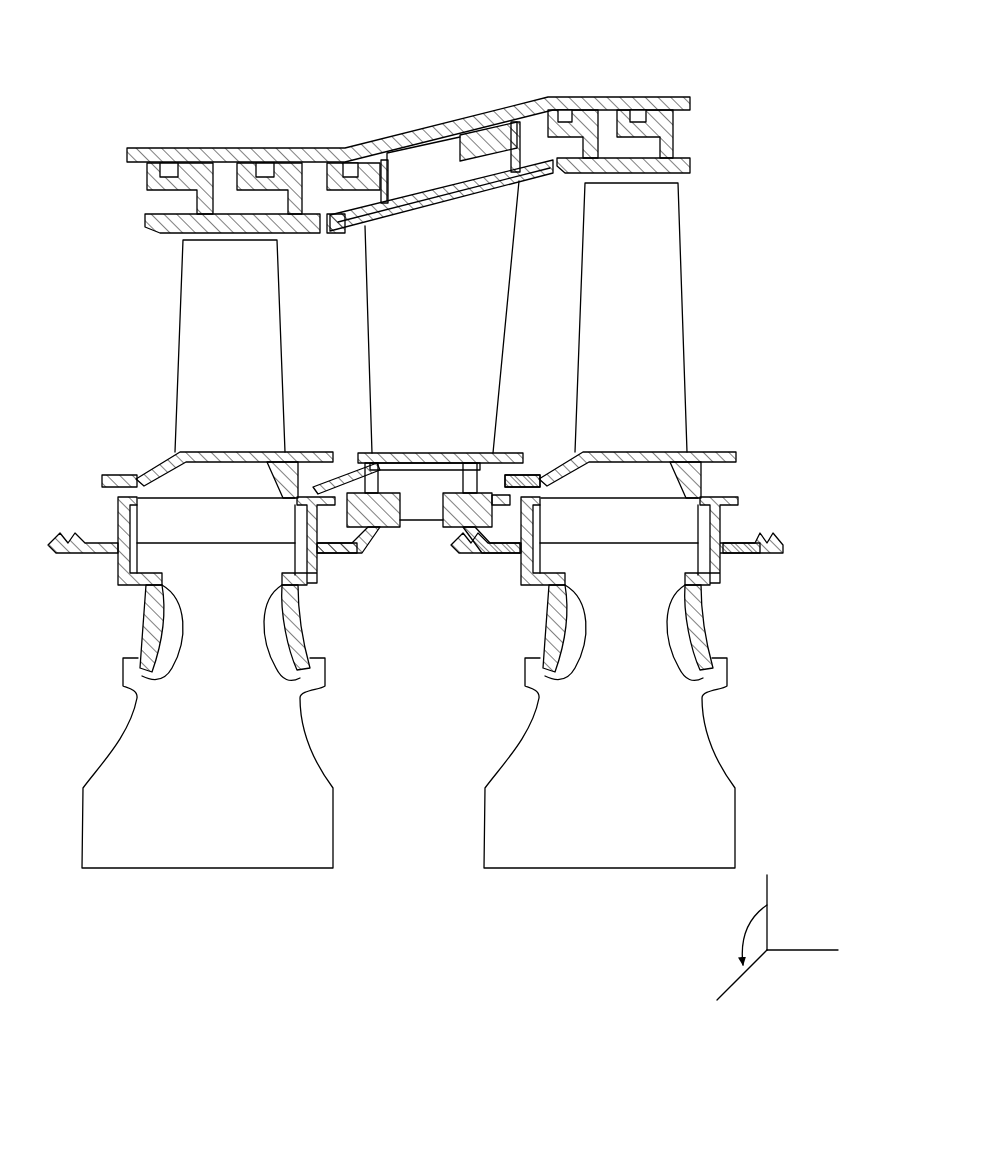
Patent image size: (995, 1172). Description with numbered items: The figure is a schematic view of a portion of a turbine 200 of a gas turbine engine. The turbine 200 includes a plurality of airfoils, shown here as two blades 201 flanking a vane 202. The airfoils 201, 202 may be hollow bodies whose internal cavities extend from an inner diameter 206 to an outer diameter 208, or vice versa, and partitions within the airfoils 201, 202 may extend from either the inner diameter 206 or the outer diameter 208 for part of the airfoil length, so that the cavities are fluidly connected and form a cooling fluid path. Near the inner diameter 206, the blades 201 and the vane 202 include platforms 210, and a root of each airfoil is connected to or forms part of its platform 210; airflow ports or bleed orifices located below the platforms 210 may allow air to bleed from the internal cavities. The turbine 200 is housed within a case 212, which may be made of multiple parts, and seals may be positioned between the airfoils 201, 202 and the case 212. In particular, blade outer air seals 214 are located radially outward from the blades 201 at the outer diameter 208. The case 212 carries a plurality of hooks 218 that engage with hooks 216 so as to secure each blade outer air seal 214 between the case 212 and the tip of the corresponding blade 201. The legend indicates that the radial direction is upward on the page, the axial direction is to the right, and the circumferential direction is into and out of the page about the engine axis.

The turbine 200 is at (125, 68).
The blade 201 is at (262, 272).
The vane 202 is at (497, 272).
The inner diameter 206 is at (353, 452).
The outer diameter 208 is at (155, 250).
The platform 210 is at (505, 453).
The case 212 is at (432, 138).
The blade outer air seal 214 is at (217, 225).
The hook 216 is at (205, 168).
The hook 218 is at (248, 175).